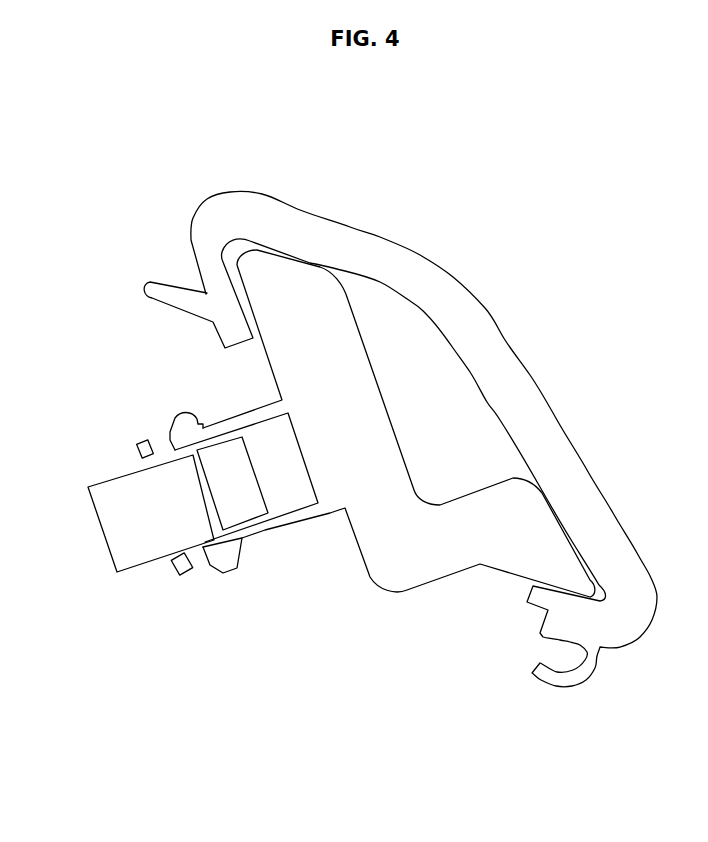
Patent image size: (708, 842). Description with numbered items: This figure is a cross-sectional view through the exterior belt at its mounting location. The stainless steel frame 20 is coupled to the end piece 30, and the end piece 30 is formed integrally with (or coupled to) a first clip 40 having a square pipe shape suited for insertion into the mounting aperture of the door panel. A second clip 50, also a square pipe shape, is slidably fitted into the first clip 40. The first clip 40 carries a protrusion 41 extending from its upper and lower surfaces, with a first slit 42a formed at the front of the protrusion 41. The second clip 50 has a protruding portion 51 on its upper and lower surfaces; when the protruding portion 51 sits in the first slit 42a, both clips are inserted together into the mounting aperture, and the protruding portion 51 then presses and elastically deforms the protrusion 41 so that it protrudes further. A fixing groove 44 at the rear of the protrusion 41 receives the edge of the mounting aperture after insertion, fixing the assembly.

The stainless steel frame 20 is at (493, 357).
The end piece 30 is at (405, 545).
The first clip 40 is at (287, 528).
The protrusion 41 is at (186, 416).
The first slit 42a is at (163, 449).
The fixing groove 44 is at (242, 548).
The second clip 50 is at (107, 480).
The protruding portion 51 is at (186, 552).